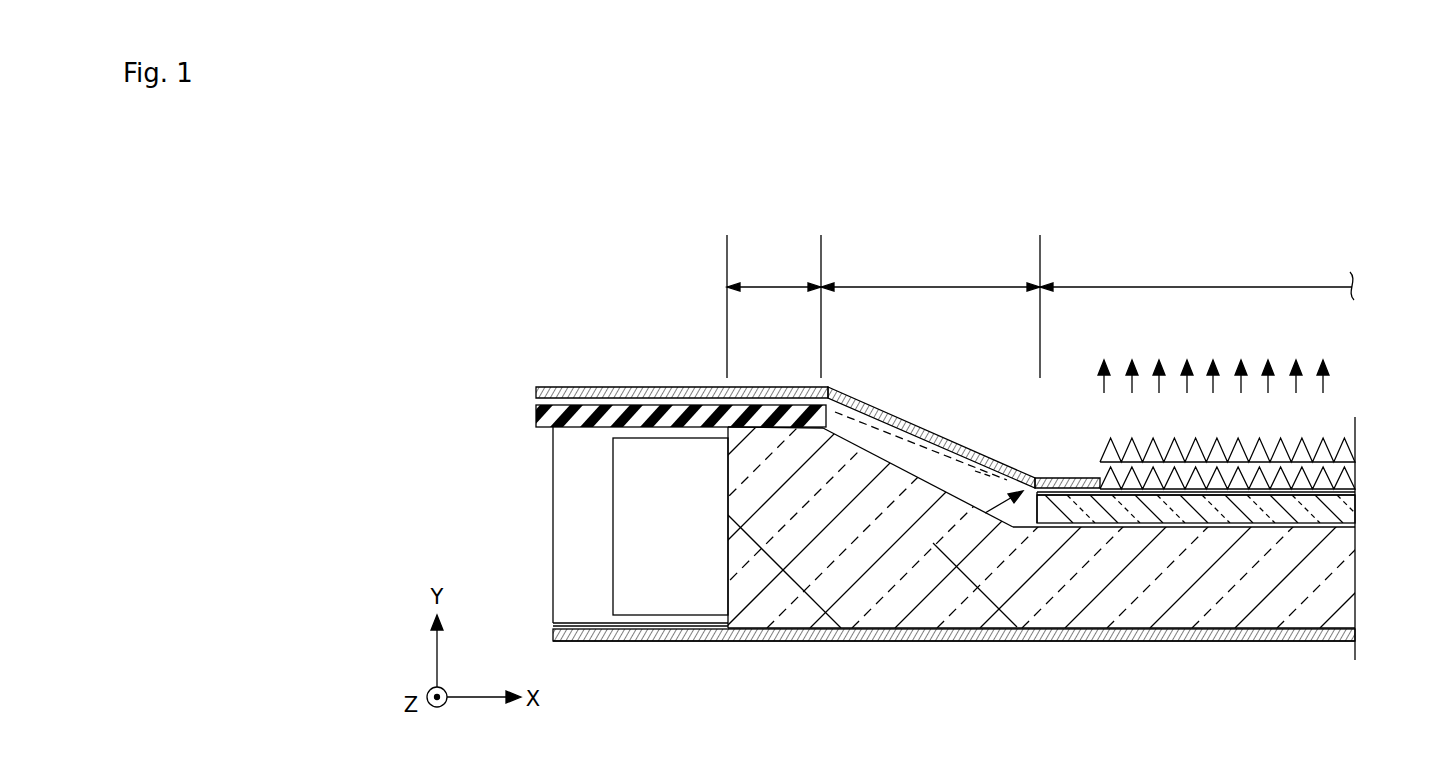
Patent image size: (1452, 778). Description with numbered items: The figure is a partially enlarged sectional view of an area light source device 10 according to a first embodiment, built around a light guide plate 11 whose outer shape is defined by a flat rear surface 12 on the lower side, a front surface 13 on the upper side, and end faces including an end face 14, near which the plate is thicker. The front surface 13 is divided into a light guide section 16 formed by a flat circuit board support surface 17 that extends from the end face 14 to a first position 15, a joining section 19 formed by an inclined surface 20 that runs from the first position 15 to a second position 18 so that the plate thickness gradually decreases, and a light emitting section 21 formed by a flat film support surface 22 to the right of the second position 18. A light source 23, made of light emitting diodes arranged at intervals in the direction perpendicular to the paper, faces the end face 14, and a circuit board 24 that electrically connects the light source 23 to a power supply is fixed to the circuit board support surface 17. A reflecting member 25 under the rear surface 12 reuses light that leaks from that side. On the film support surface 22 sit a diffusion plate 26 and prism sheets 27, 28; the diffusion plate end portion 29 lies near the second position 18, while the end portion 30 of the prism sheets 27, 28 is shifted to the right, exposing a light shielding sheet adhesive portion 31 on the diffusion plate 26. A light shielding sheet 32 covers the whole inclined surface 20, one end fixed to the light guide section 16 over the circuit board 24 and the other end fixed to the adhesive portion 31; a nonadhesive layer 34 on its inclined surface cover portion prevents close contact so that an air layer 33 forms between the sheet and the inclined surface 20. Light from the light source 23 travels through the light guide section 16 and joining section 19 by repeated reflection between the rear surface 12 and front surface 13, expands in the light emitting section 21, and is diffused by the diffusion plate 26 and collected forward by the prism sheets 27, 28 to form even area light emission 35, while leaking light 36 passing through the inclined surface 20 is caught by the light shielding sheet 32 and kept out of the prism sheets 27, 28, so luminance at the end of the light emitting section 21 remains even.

The area light source device 10 is at (1376, 381).
The light guide plate 11 is at (1335, 582).
The rear surface 12 is at (1322, 628).
The front surface 13 is at (1333, 534).
The end face 14 is at (729, 598).
The first position 15 is at (838, 393).
The light guide section 16 is at (770, 283).
The circuit board support surface 17 is at (746, 427).
The second position 18 is at (1018, 529).
The joining section 19 is at (936, 283).
The inclined surface 20 is at (889, 462).
The light emitting section 21 is at (1184, 283).
The film support surface 22 is at (1225, 497).
The light source 23 is at (667, 597).
The circuit board 24 is at (614, 396).
The reflecting member 25 is at (938, 643).
The diffusion plate 26 is at (1281, 510).
The prism sheet 27 is at (1330, 478).
The prism sheet 28 is at (1330, 452).
The diffusion plate end portion 29 is at (1038, 494).
The end portion 30 is at (1100, 476).
The light shielding sheet adhesive portion 31 is at (1072, 495).
The light shielding sheet 32 is at (953, 468).
The air layer 33 is at (924, 468).
The nonadhesive layer 34 is at (993, 477).
The area light emission 35 is at (1238, 358).
The leaking light 36 is at (1019, 485).